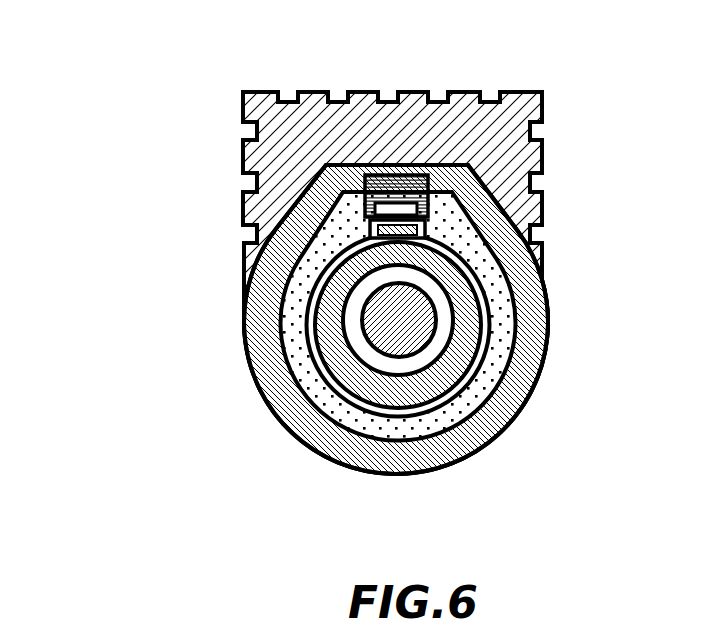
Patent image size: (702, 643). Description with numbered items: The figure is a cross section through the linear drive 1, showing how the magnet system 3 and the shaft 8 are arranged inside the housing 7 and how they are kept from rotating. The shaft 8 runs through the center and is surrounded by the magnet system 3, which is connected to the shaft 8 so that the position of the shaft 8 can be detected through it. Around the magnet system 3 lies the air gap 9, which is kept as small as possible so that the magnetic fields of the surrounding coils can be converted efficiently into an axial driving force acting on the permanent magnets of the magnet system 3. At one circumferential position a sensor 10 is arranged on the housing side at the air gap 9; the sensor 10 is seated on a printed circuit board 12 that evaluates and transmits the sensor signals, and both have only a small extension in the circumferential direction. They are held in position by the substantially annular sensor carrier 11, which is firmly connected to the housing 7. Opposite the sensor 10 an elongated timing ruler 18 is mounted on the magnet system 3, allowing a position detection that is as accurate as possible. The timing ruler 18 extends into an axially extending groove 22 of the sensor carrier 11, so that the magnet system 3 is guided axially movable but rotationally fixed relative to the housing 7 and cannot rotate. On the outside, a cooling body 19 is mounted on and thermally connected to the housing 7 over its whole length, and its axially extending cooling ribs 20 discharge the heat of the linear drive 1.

The linear drive 1 is at (200, 151).
The magnet system 3 is at (470, 420).
The housing 7 is at (262, 350).
The shaft 8 is at (387, 317).
The air gap 9 is at (484, 326).
The sensor 10 is at (386, 208).
The sensor carrier 11 is at (500, 372).
The printed circuit board 12 is at (406, 214).
The timing ruler 18 is at (370, 236).
The cooling body 19 is at (522, 108).
The cooling ribs 20 is at (288, 92).
The groove 22 is at (422, 222).